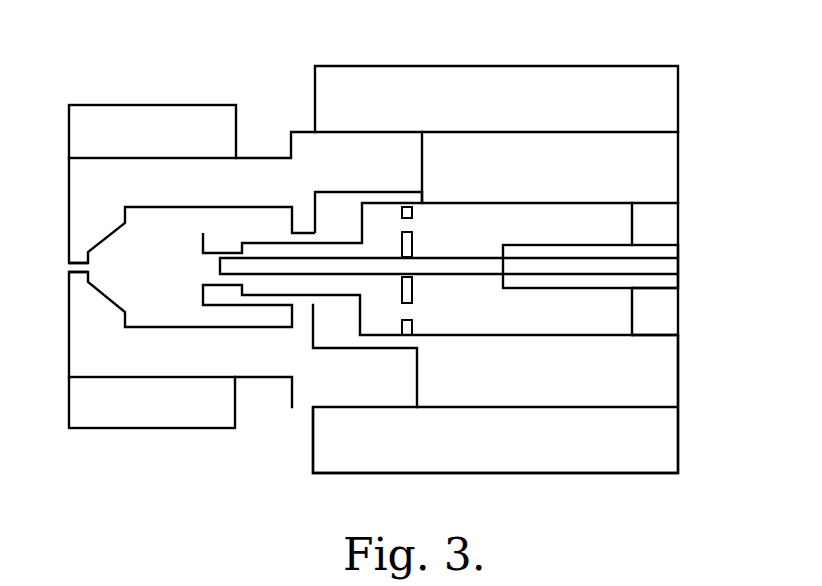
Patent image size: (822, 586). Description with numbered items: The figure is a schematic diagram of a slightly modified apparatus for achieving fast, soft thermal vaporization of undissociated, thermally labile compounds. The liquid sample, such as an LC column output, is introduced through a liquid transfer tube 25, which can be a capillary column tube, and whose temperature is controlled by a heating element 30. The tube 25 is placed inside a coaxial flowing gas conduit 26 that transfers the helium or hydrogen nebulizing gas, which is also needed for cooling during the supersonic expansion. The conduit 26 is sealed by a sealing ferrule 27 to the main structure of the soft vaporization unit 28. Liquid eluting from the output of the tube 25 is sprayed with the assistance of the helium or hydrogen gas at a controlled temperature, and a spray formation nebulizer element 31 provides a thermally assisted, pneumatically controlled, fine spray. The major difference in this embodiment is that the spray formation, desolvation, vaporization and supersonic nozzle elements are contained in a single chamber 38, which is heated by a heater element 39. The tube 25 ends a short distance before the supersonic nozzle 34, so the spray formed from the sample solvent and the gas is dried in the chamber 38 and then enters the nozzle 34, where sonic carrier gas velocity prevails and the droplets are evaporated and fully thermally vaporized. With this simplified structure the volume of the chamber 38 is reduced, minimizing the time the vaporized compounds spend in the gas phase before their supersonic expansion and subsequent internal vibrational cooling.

The liquid transfer tube 25 is at (472, 230).
The coaxial flowing gas conduit 26 is at (597, 240).
The sealing ferrule 27 is at (655, 315).
The soft vaporization unit 28 is at (640, 367).
The heating element 30 is at (600, 448).
The spray formation nebulizer element 31 is at (350, 217).
The supersonic nozzle 34 is at (68, 267).
The single chamber 38 is at (182, 232).
The heater element 39 is at (122, 143).